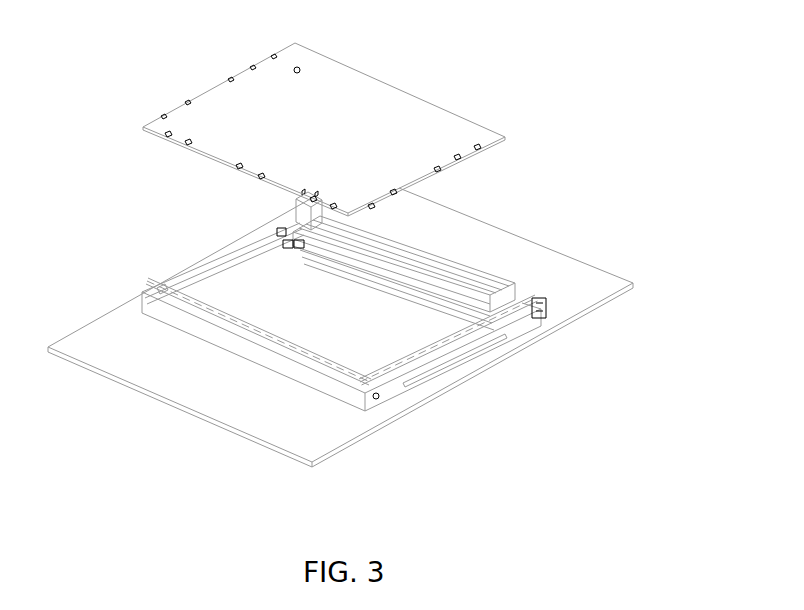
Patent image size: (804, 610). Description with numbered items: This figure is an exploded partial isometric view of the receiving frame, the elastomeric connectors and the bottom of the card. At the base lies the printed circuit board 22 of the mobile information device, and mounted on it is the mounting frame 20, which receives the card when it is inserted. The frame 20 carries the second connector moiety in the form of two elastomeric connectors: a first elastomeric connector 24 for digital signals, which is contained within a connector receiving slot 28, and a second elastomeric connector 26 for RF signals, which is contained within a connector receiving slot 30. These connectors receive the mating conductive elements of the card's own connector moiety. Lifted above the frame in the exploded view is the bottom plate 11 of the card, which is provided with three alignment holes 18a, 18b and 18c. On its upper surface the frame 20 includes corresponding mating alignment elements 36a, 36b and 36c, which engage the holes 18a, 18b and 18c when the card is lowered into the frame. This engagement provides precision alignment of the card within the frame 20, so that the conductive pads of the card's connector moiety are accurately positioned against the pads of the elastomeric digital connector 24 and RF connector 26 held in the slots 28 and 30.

The bottom plate 11 is at (423, 117).
The alignment hole 18a is at (273, 58).
The alignment hole 18b is at (300, 69).
The alignment hole 18c is at (474, 150).
The mounting frame 20 is at (393, 390).
The printed circuit board 22 is at (110, 337).
The first elastomeric connector 24 is at (498, 282).
The second elastomeric connector 26 is at (303, 217).
The connector receiving slot 28 is at (442, 292).
The connector receiving slot 30 is at (289, 238).
The mating alignment element 36a is at (278, 230).
The mating alignment element 36b is at (312, 242).
The mating alignment element 36c is at (490, 318).